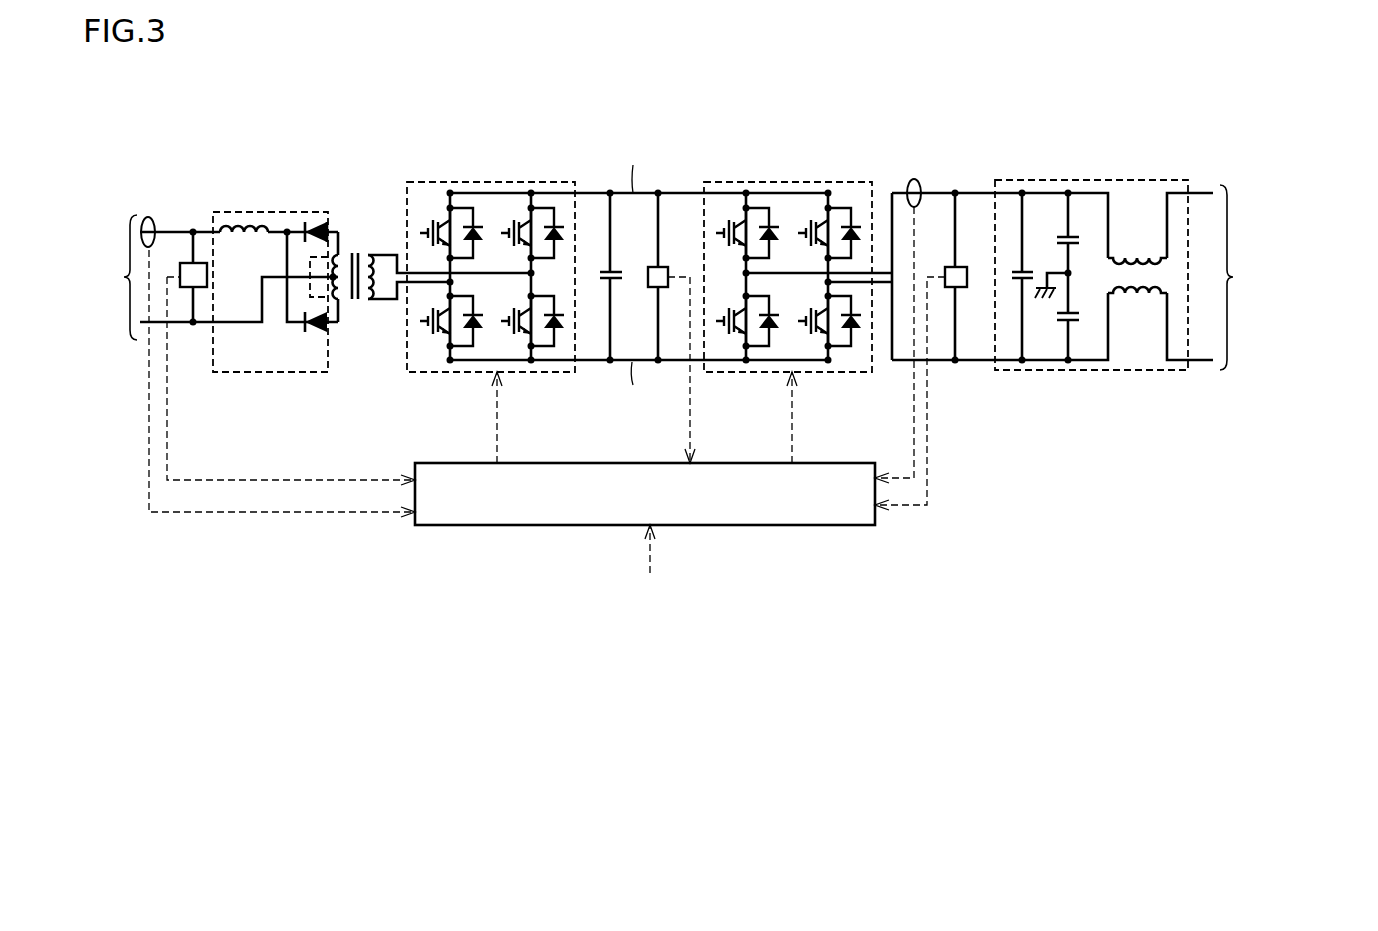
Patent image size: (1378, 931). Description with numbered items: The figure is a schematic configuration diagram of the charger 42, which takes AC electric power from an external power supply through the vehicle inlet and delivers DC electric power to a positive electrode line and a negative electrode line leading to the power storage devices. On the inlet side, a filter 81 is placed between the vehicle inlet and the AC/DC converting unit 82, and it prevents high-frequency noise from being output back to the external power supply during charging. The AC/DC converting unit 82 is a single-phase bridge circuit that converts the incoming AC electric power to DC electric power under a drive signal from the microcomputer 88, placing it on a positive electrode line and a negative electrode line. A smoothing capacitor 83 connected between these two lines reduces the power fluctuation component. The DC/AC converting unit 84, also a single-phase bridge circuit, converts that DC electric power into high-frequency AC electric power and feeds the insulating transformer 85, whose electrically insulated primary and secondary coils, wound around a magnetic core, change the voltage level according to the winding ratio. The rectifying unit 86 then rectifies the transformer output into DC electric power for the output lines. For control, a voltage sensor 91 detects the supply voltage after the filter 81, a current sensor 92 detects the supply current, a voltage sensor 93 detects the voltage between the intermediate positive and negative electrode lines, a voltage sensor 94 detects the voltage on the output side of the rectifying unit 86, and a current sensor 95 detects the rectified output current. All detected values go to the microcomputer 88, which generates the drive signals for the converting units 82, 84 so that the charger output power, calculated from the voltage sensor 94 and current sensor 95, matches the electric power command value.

The charger 42 is at (261, 90).
The filter 81 is at (1113, 180).
The AC/DC converting unit 82 is at (810, 182).
The smoothing capacitor 83 is at (604, 271).
The DC/AC converting unit 84 is at (515, 182).
The insulating transformer 85 is at (367, 210).
The rectifying unit 86 is at (290, 212).
The microcomputer 88 is at (815, 463).
The voltage sensor 91 is at (958, 267).
The current sensor 92 is at (914, 179).
The voltage sensor 93 is at (650, 267).
The voltage sensor 94 is at (202, 263).
The current sensor 95 is at (148, 217).